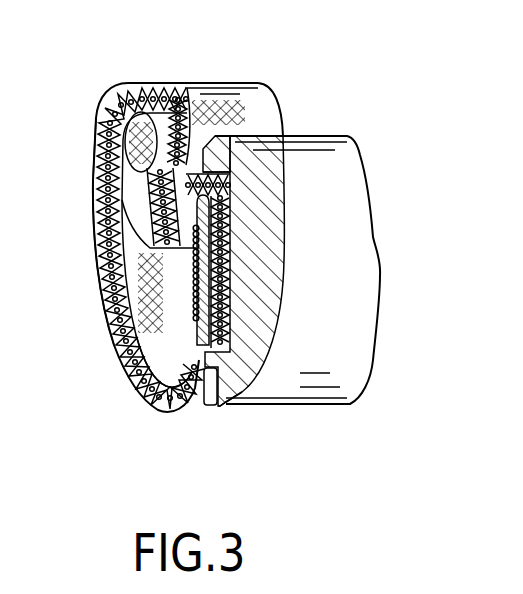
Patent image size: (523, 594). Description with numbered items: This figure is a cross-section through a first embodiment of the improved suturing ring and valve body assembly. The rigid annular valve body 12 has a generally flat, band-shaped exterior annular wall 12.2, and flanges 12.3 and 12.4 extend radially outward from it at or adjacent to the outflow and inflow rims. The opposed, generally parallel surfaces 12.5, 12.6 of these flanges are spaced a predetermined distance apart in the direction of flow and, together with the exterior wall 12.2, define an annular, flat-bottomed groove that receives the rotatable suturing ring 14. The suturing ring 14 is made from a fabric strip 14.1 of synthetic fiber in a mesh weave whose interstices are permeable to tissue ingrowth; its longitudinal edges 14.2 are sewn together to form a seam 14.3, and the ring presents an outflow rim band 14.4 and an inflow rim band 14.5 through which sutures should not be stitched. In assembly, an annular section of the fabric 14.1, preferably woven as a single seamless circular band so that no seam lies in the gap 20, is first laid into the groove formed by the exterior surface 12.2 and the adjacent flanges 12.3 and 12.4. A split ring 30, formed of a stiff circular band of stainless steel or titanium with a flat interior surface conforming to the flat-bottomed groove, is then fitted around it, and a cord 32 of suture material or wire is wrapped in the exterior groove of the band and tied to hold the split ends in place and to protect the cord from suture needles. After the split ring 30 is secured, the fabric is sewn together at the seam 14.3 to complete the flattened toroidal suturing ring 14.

The annular valve body 12 is at (279, 277).
The exterior annular wall 12.2 is at (280, 235).
The flange 12.3 is at (222, 157).
The flange 12.4 is at (227, 410).
The surface of flange 12.5 is at (234, 172).
The surface of flange 12.6 is at (206, 400).
The rotatable suturing ring 14 is at (91, 113).
The fabric strip 14.1 is at (118, 313).
The longitudinal edges 14.2 is at (150, 238).
The seam 14.3 is at (162, 187).
The outflow rim band 14.4 is at (214, 110).
The inflow rim band 14.5 is at (188, 410).
The gap 20 is at (238, 207).
The split ring 30 is at (185, 273).
The cord 32 is at (171, 294).